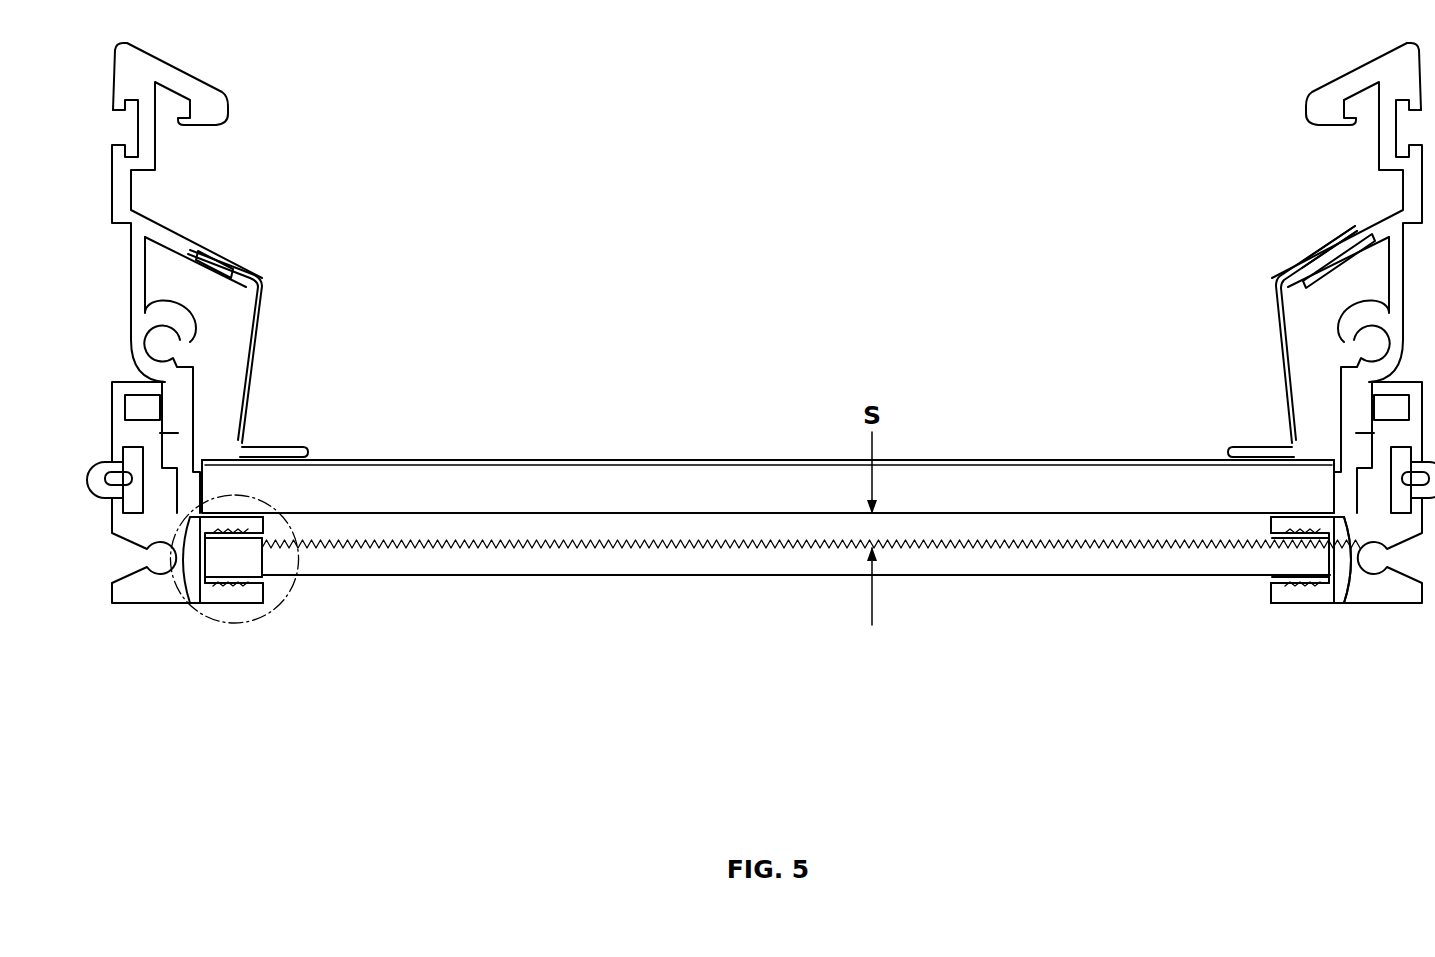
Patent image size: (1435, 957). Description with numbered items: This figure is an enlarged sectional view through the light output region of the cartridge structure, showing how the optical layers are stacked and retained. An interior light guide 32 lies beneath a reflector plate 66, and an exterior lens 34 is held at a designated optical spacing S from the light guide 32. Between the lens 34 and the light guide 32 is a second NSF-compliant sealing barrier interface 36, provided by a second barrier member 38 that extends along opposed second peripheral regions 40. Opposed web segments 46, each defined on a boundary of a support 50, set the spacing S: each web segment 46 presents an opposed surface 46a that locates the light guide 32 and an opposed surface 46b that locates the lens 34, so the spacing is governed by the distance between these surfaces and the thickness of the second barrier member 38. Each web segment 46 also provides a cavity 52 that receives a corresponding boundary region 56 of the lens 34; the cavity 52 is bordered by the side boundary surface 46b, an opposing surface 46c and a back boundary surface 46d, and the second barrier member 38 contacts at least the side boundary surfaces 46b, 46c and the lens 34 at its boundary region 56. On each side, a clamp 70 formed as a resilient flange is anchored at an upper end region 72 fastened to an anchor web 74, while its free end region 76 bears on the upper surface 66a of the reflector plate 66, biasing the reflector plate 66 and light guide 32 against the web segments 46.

The light guide 32 is at (985, 495).
The lens 34 is at (995, 562).
The second NSF-compliant sealing barrier interface 36 is at (173, 588).
The second barrier member 38 is at (273, 588).
The second peripheral regions 40 is at (1343, 523).
The web segments 46 is at (250, 503).
The opposed surface 46a is at (228, 503).
The opposed surface 46b is at (246, 540).
The opposing surface 46c is at (264, 568).
The back boundary surface 46d is at (212, 558).
The support 50 is at (207, 588).
The cavity 52 is at (1268, 558).
The boundary region 56 is at (1334, 584).
The reflector plate 66 is at (687, 453).
The upper surface 66a is at (1136, 455).
The clamp 70 is at (268, 263).
The upper end region 72 is at (1298, 262).
The anchor web 74 is at (1362, 243).
The free end region 76 is at (1233, 440).